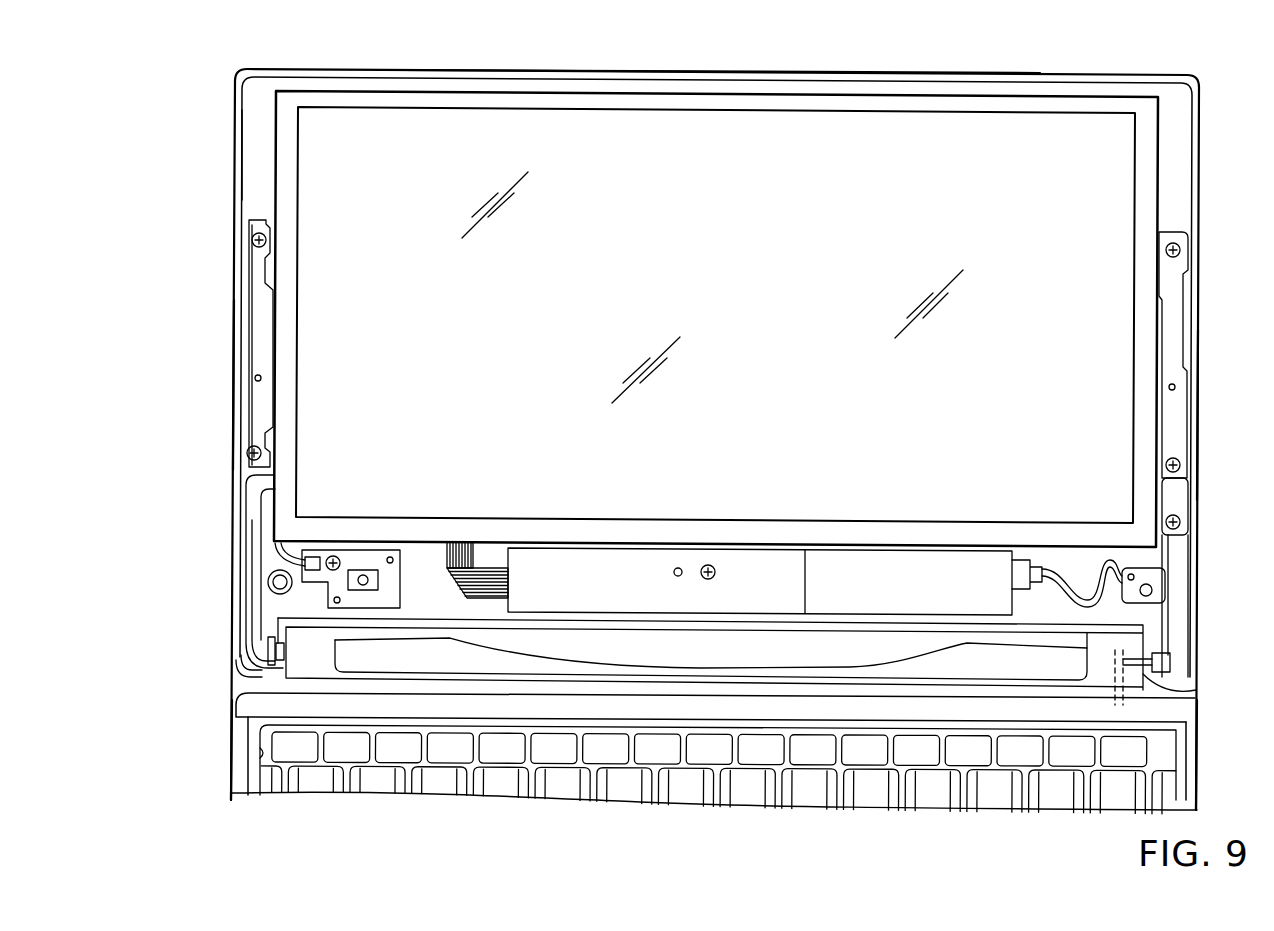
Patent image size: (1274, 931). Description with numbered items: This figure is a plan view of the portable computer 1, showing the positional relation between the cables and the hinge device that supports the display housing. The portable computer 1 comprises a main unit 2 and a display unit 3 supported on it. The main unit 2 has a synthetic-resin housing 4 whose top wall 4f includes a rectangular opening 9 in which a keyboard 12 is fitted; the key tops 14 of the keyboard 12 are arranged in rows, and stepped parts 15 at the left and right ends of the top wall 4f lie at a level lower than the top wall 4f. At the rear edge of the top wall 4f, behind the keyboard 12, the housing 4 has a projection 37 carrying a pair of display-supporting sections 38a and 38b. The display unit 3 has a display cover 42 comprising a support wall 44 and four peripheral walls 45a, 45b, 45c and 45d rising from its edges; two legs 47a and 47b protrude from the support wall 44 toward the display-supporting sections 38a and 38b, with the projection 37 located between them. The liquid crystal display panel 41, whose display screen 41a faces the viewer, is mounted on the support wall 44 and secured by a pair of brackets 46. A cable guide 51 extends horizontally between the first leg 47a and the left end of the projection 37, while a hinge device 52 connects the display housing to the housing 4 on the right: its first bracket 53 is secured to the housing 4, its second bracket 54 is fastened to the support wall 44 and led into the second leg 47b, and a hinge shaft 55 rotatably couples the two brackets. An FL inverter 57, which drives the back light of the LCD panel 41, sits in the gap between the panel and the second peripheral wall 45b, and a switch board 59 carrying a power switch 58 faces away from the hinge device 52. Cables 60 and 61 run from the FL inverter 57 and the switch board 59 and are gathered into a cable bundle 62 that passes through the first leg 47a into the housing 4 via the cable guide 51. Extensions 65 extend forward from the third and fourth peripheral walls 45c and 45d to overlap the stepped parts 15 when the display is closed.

The portable computer 1 is at (1208, 512).
The main unit 2 is at (218, 716).
The display unit 3 is at (1208, 79).
The housing 4 is at (1200, 762).
The top wall 4f is at (1190, 717).
The opening 9 is at (262, 755).
The keyboard 12 is at (445, 783).
The key tops 14 is at (822, 808).
The stepped parts 15 is at (230, 786).
The projection 37 is at (530, 657).
The display-supporting section 38a is at (238, 672).
The display-supporting section 38b is at (1196, 692).
The liquid crystal display panel 41 is at (1150, 188).
The display screen 41a is at (818, 264).
The display cover 42 is at (1200, 137).
The support wall 44 is at (248, 148).
The first peripheral wall 45a is at (712, 72).
The second peripheral wall 45b is at (680, 625).
The third peripheral wall 45c is at (234, 387).
The fourth peripheral wall 45d is at (1197, 427).
The brackets 46 is at (258, 314).
The first leg 47a is at (276, 652).
The second leg 47b is at (1170, 663).
The cable guide 51 is at (268, 640).
The hinge device 52 is at (1172, 610).
The first bracket 53 is at (1115, 668).
The second bracket 54 is at (1165, 580).
The hinge shaft 55 is at (1150, 660).
The FL inverter 57 is at (790, 560).
The power switch 58 is at (363, 572).
The switch board 59 is at (400, 586).
The cable 60 is at (462, 578).
The cable 61 is at (305, 557).
The cable bundle 62 is at (258, 507).
The extensions 65 is at (244, 245).